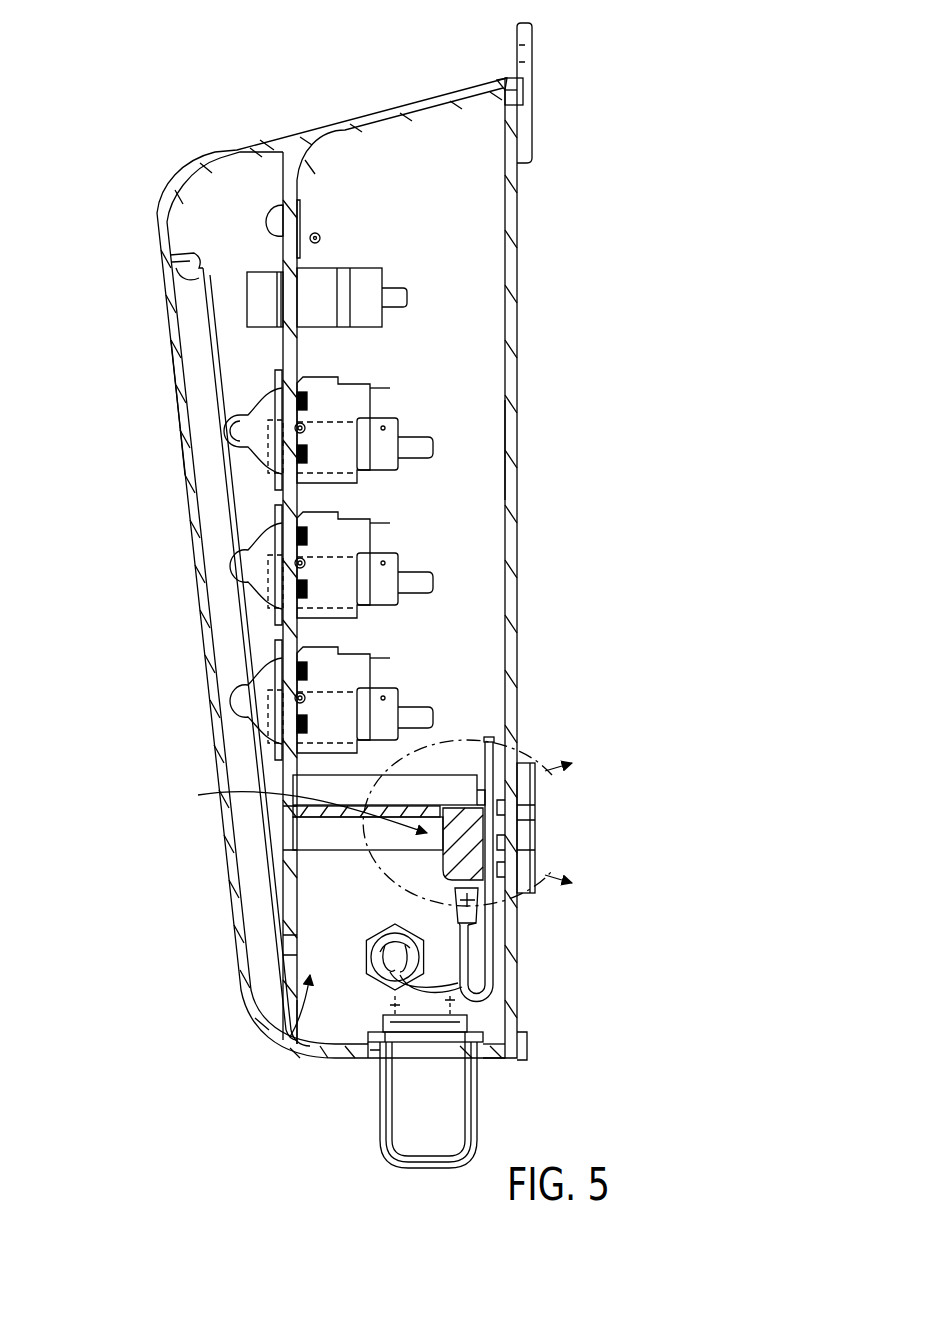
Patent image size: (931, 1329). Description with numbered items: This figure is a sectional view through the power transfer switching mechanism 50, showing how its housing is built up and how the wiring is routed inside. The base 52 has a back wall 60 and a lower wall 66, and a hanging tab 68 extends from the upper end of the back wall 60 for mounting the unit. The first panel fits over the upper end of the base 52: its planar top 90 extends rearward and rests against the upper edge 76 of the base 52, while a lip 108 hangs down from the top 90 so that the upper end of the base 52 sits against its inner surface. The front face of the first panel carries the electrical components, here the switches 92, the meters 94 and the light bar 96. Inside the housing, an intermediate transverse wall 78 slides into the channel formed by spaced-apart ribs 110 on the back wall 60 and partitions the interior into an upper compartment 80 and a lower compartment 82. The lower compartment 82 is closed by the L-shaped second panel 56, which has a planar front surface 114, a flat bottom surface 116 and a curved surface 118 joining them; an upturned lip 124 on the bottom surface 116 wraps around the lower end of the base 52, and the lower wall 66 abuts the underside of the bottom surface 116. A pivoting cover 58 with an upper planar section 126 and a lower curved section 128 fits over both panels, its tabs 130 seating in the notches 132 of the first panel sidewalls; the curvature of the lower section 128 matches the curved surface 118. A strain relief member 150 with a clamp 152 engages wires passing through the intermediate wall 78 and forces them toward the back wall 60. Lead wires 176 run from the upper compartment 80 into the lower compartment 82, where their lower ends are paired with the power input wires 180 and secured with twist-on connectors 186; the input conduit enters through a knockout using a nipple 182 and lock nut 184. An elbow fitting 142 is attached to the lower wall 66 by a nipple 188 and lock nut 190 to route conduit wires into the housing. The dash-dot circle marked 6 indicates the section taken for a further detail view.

The section line 6- 6 is at (476, 823).
The power transfer switching mechanism 50 is at (80, 155).
The base 52 is at (602, 170).
The second panel 56 is at (277, 984).
The cover 58 is at (155, 437).
The back wall 60 is at (511, 440).
The lower wall 66 is at (370, 1040).
The hanging tab 68 is at (533, 30).
The edge 76 is at (506, 82).
The intermediate transverse wall 78 is at (322, 808).
The upper compartment 80 is at (484, 546).
The lower compartment 82 is at (290, 1018).
The top 90 is at (312, 133).
The switches 92 is at (418, 412).
The meters 94 is at (330, 282).
The light bar 96 is at (276, 216).
The lip 108 is at (523, 90).
The ribs 110 is at (313, 786).
The front surface 114 is at (287, 945).
The bottom surface 116 is at (502, 1058).
The curved surface 118 is at (303, 1050).
The upturned lip 124 is at (528, 1048).
The upper planar section 126 is at (203, 618).
The lower curved section 128 is at (292, 1048).
The tabs 130 is at (173, 265).
The notches 132 is at (186, 280).
The elbow fitting 142 is at (437, 1143).
The strain relief member 150 is at (294, 807).
The clamp 152 is at (463, 843).
The lead wires 176 is at (480, 913).
The power input wires 180 is at (480, 992).
The nipple 182 is at (377, 938).
The lock nut 184 is at (366, 962).
The twist-on connectors 186 is at (458, 897).
The nipple 188 is at (393, 1003).
The lock nut 190 is at (382, 1030).